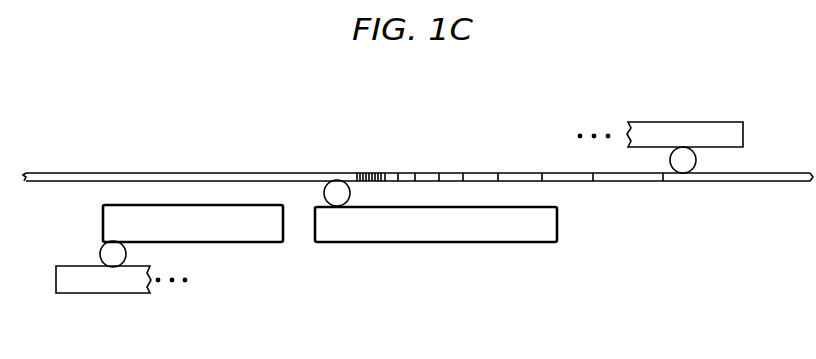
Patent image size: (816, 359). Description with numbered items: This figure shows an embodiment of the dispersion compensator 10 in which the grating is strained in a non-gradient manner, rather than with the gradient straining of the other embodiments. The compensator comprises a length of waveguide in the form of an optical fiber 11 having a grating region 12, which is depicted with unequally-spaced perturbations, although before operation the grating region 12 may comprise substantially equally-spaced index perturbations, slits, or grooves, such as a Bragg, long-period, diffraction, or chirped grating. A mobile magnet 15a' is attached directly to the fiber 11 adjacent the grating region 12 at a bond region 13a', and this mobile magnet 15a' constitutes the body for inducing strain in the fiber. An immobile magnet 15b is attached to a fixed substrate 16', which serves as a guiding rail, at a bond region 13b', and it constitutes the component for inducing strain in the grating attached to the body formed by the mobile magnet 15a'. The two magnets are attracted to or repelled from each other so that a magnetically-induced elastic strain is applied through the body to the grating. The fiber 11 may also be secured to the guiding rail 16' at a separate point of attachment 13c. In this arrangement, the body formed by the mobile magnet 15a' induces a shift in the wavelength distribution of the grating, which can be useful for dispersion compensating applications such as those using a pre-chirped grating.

The dispersion compensator 10 is at (232, 72).
The optical fiber 11 is at (201, 173).
The grating region 12 is at (389, 173).
The bond region 13a' is at (323, 160).
The bond region 13b' is at (83, 239).
The point of attachment 13c is at (693, 168).
The mobile magnet 15a' is at (436, 246).
The immobile magnet 15b is at (228, 227).
The fixed substrate 16' is at (399, 212).